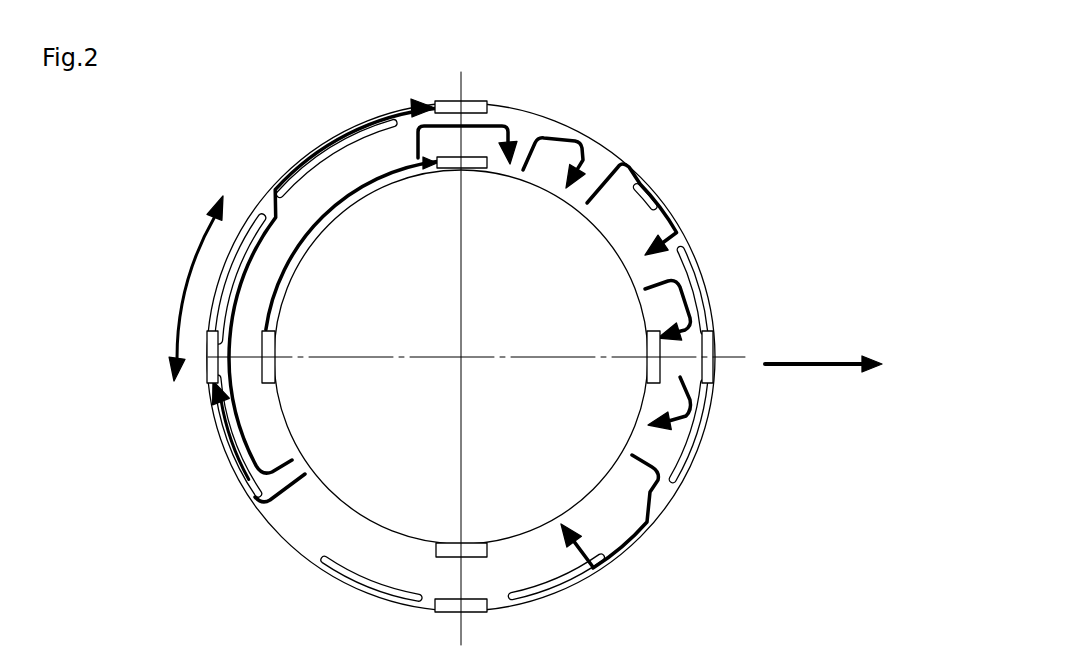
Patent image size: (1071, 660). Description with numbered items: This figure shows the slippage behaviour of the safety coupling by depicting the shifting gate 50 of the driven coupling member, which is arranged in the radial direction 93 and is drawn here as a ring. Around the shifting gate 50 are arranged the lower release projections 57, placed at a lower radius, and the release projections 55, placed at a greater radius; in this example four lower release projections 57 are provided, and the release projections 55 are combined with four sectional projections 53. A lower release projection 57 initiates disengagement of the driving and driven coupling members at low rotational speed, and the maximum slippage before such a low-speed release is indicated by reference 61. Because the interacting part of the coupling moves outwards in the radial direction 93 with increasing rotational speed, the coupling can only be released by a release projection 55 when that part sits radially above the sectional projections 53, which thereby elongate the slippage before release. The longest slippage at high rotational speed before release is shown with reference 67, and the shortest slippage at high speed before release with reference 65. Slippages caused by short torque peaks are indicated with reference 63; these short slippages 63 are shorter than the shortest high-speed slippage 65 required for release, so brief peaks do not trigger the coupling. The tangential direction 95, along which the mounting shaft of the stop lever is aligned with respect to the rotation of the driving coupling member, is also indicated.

The shifting gate 50 is at (757, 311).
The sectional projections 53 is at (345, 590).
The release projections 55 is at (570, 607).
The lower release projections 57 is at (460, 547).
The maximum slippage before release at low rotational speed 61 is at (343, 176).
The short slippages 63 is at (609, 165).
The shortest slippage at high speed before release 65 is at (204, 422).
The longest slippage at high rotational speed before release 67 is at (272, 167).
The radial direction 93 is at (812, 370).
The tangential direction 95 is at (185, 292).